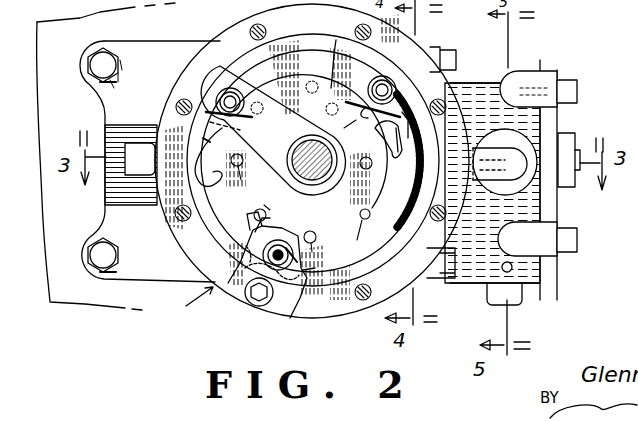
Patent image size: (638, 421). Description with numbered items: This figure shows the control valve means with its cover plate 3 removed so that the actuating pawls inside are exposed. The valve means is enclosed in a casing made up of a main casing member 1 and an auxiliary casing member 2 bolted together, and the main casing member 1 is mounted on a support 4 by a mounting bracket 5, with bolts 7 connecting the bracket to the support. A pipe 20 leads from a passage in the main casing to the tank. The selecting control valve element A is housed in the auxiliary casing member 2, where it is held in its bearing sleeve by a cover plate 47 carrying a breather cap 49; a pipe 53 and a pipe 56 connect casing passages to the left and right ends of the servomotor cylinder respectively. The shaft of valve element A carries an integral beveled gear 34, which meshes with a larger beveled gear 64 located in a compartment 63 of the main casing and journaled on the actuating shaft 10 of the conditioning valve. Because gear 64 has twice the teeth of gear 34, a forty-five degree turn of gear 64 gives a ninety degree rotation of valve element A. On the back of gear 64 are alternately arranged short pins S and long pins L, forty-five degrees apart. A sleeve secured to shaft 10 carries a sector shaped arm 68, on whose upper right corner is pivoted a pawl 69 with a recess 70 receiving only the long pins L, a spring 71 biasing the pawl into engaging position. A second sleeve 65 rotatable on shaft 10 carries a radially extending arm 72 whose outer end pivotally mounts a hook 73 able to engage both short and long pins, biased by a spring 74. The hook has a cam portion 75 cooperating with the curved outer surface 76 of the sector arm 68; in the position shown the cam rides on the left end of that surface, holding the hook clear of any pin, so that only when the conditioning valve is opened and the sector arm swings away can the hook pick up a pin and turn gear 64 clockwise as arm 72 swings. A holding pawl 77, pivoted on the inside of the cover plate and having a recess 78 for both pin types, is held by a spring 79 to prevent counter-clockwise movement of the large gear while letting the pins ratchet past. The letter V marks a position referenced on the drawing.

The main casing member 1 is at (366, 313).
The auxiliary casing member 2 is at (527, 123).
The cover plate 3 is at (283, 314).
The support 4 is at (82, 17).
The mounting bracket 5 is at (167, 47).
The bolts 7 is at (100, 65).
The actuating shaft 10 is at (287, 180).
The pipe 20 is at (148, 202).
The beveled gear 34 is at (418, 165).
The cover plate 47 is at (548, 248).
The breather cap 49 is at (578, 190).
The pipe 53 is at (493, 167).
The pipe 56 is at (520, 297).
The compartment 63 is at (258, 58).
The beveled gear 64 is at (310, 285).
The sleeve 65 is at (313, 188).
The sector shaped arm 68 is at (334, 54).
The pawl 69 is at (412, 130).
The recess 70 is at (414, 145).
The spring 71 is at (402, 104).
The radially extending arm 72 is at (242, 92).
The hook 73 is at (205, 146).
The spring 74 is at (217, 106).
The cam portion 75 is at (206, 128).
The curved outer surface 76 is at (297, 78).
The holding pawl 77 is at (252, 238).
The recess 78 is at (267, 230).
The spring 79 is at (243, 247).
The selecting control valve element A is at (543, 72).
The valve position V is at (192, 302).
The long pins L is at (310, 169).
The short pins S is at (298, 166).